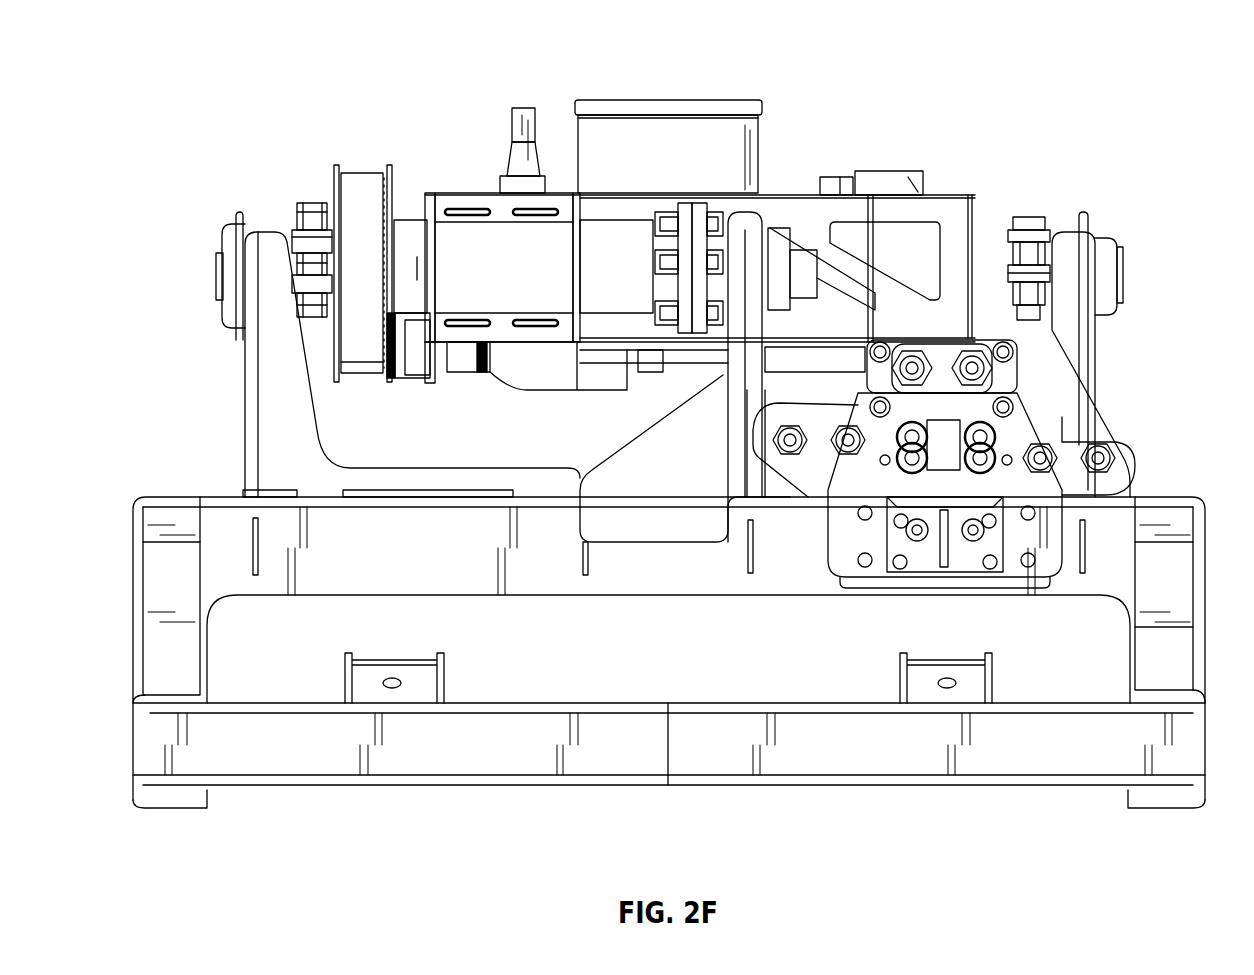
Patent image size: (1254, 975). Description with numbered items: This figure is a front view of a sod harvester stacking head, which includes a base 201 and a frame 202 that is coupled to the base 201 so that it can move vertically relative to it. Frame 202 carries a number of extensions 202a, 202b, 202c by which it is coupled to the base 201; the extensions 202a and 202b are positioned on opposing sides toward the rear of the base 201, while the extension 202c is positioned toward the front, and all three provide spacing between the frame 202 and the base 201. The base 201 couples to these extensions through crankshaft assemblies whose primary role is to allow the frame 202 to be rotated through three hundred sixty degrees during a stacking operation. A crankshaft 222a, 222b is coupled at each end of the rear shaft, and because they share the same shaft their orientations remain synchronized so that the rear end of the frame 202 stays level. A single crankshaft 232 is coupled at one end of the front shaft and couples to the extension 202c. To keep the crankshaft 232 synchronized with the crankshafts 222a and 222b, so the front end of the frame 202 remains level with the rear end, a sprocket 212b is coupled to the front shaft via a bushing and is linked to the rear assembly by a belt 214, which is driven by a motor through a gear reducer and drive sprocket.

The base 201 is at (395, 92).
The frame 202 is at (132, 808).
The extension 202a is at (240, 380).
The extension 202b is at (1097, 388).
The extension 202c is at (722, 375).
The sprocket 212b is at (338, 165).
The belt 214 is at (362, 170).
The crankshaft 222a is at (302, 192).
The crankshaft 222b is at (1030, 215).
The crankshaft 232 is at (703, 202).